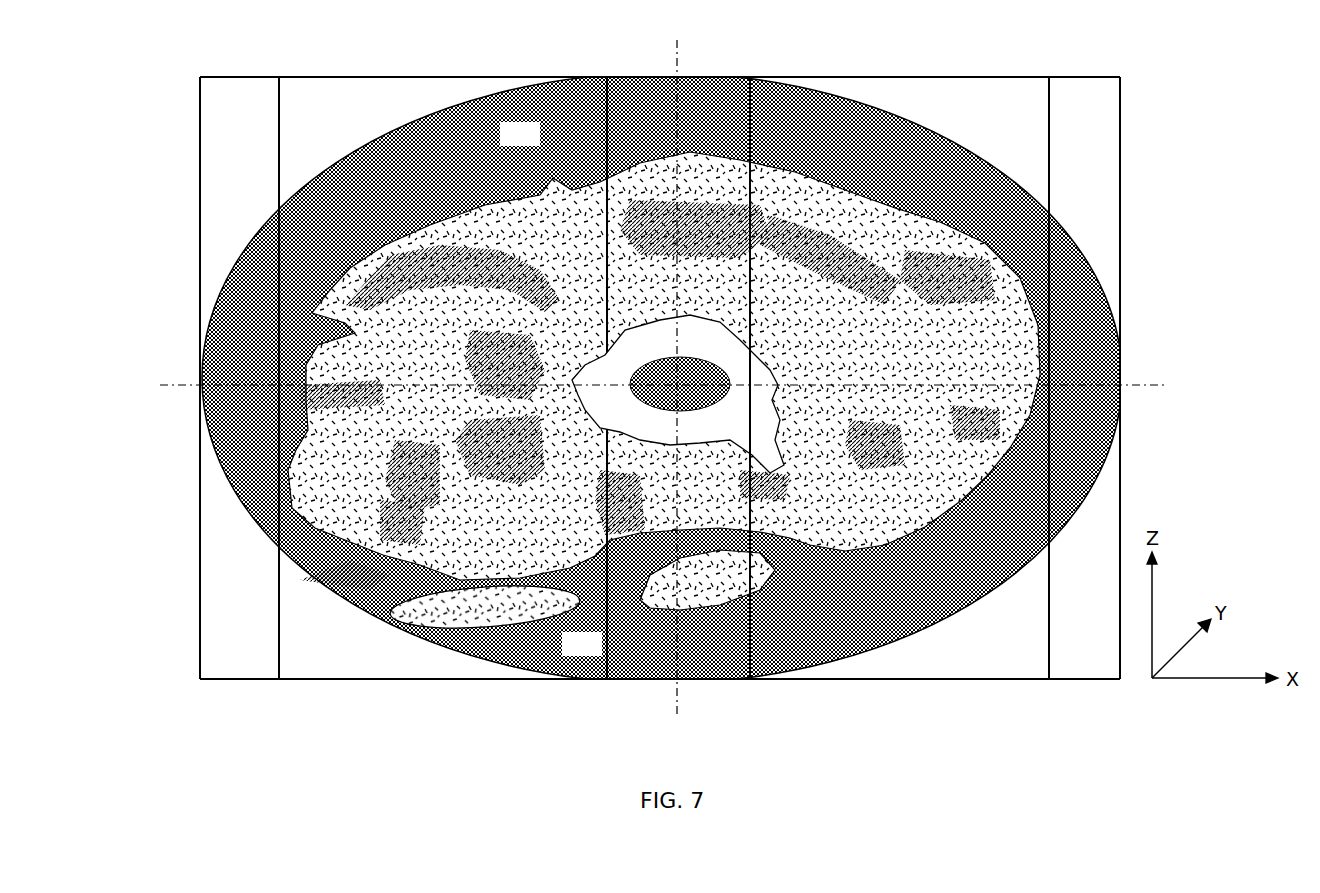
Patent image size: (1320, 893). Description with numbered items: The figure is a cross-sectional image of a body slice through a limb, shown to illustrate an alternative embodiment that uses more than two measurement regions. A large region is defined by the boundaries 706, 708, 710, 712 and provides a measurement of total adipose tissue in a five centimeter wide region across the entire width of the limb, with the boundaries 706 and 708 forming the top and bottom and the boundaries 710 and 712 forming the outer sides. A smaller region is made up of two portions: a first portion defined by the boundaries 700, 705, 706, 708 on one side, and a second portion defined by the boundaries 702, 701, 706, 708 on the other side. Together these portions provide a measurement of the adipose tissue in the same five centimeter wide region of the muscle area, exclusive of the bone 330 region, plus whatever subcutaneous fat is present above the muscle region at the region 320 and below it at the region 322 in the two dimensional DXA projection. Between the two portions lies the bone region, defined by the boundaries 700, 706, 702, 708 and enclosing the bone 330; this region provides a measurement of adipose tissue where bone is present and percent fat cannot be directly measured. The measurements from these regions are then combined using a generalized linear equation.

The boundary 700 is at (600, 78).
The boundary 701 is at (1052, 103).
The boundary 702 is at (757, 90).
The boundary 705 is at (278, 637).
The boundary 706 is at (350, 76).
The boundary 708 is at (478, 680).
The boundary 710 is at (200, 125).
The boundary 712 is at (1122, 175).
The region 320 is at (537, 144).
The region 322 is at (599, 654).
The bone 330 is at (717, 427).